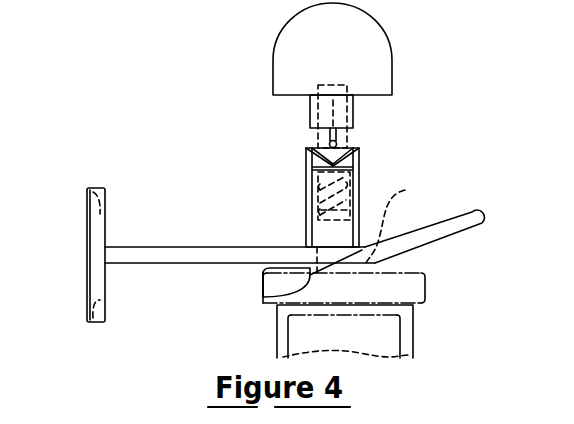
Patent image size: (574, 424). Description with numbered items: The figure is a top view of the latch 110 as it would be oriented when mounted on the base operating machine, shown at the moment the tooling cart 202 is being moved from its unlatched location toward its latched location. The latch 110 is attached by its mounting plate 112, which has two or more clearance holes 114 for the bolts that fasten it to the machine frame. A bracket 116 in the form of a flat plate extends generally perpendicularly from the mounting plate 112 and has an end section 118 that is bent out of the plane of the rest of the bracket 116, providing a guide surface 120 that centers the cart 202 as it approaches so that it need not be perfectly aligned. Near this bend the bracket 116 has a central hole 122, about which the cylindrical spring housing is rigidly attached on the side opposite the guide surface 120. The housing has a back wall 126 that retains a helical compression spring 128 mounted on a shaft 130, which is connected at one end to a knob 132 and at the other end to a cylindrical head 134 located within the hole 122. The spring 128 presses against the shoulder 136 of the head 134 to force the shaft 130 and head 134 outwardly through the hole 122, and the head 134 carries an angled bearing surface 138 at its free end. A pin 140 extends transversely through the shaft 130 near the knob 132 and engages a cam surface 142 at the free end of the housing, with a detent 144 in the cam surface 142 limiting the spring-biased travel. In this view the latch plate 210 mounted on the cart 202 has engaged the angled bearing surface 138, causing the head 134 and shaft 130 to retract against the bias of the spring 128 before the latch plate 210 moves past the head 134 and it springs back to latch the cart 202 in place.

The latch 110 is at (460, 64).
The mounting plate 112 is at (88, 246).
The clearance holes 114 is at (88, 307).
The bracket 116 is at (143, 258).
The end section 118 is at (478, 213).
The guide surface 120 is at (440, 243).
The hole 122 is at (402, 220).
The back wall 126 is at (306, 152).
The spring 128 is at (318, 190).
The shaft 130 is at (349, 98).
The knob 132 is at (273, 38).
The head 134 is at (263, 270).
The shoulder 136 is at (318, 209).
The angled bearing surface 138 is at (268, 298).
The pin 140 is at (333, 104).
The cam surface 142 is at (331, 136).
The detent 144 is at (360, 150).
The tooling cart 202 is at (420, 334).
The latch plate 210 is at (415, 289).